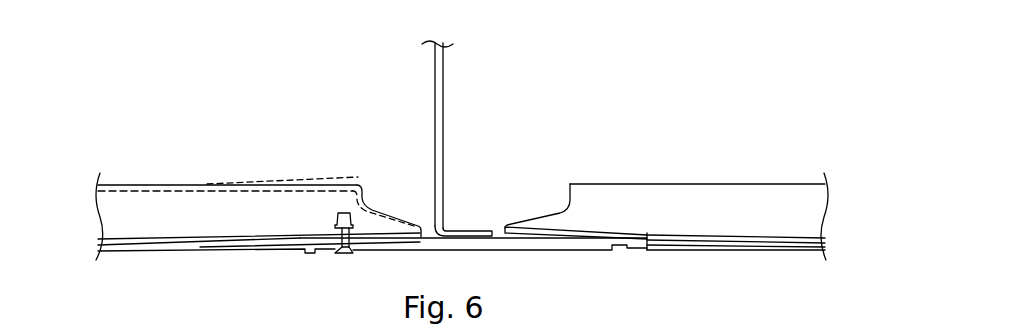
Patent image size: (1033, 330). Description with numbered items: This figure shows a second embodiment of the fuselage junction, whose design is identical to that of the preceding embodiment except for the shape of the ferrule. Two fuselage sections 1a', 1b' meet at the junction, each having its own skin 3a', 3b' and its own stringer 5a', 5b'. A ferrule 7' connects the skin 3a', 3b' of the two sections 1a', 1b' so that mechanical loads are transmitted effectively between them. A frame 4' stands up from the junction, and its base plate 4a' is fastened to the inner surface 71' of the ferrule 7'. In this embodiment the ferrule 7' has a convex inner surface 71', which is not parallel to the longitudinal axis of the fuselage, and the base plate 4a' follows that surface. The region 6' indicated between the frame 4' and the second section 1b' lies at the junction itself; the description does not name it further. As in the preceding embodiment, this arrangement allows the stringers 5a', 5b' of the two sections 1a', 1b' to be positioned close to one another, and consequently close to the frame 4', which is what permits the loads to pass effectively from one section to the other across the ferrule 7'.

The section 1a' is at (314, 176).
The section 1b' is at (604, 171).
The skin 3a' is at (259, 254).
The skin 3b' is at (733, 259).
The frame 4' is at (423, 134).
The base plate 4a' is at (463, 212).
The stringer 5a' is at (227, 175).
The stringer 5b' is at (697, 174).
The seam joint 6' is at (451, 138).
The ferrule 7' is at (473, 238).
The inner surface 71' is at (571, 210).